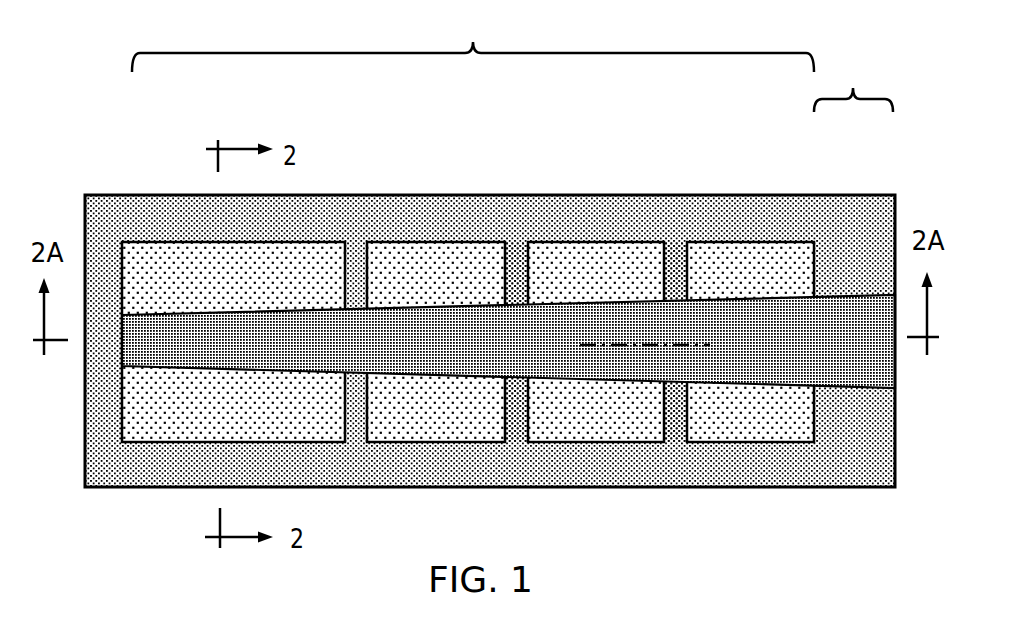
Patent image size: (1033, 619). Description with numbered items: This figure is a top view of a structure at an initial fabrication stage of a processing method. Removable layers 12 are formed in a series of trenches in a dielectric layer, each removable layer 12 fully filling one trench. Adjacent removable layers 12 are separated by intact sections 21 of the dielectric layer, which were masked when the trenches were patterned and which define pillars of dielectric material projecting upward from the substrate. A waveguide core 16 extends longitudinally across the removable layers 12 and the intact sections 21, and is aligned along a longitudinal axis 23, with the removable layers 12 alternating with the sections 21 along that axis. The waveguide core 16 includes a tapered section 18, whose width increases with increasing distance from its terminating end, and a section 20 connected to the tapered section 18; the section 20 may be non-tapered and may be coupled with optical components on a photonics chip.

The removable layer 12 is at (210, 267).
The waveguide core 16 is at (202, 337).
The tapered section 18 is at (473, 39).
The section 20 is at (853, 85).
The intact section 21 is at (515, 267).
The longitudinal axis 23 is at (615, 347).